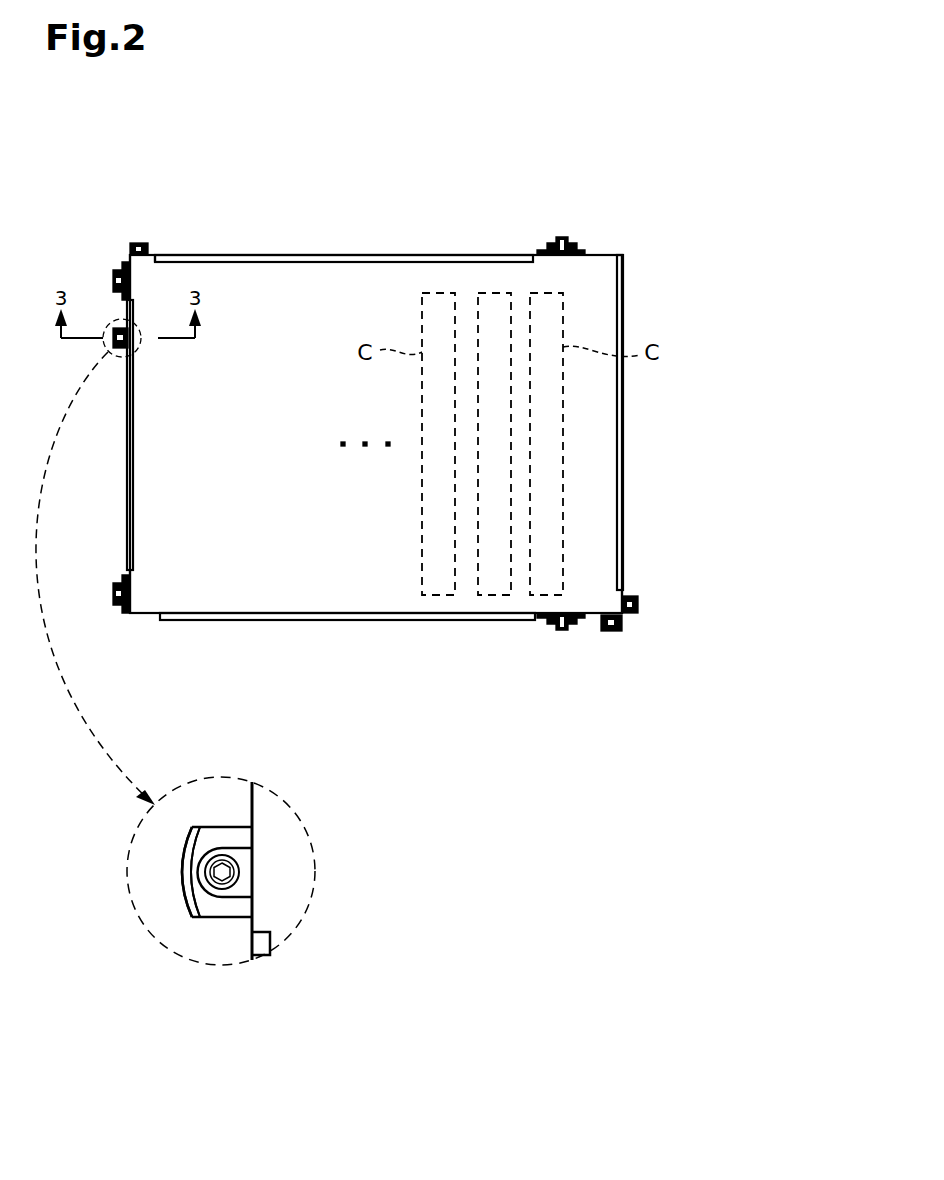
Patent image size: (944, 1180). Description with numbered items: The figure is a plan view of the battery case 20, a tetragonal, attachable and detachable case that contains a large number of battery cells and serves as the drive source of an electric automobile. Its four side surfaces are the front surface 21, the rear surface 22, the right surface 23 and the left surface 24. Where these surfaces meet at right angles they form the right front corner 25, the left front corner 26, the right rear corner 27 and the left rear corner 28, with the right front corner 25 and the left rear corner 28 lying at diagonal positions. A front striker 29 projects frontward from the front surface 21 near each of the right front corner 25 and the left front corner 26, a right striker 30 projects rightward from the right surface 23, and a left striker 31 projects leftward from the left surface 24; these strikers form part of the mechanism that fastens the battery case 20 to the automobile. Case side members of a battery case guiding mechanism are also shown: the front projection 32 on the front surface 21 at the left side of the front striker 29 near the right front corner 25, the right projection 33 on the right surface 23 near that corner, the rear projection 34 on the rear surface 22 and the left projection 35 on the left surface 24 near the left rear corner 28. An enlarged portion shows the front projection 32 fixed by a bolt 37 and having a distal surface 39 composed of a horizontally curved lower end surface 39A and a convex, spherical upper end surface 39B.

The battery case 20 is at (493, 200).
The front surface 21 is at (126, 499).
The rear surface 22 is at (625, 405).
The right surface 23 is at (396, 252).
The left surface 24 is at (380, 621).
The right front corner 25 is at (152, 273).
The left front corner 26 is at (147, 598).
The right rear corner 27 is at (598, 281).
The left rear corner 28 is at (610, 592).
The front striker 29 is at (113, 280).
The right striker 30 is at (562, 240).
The left striker 31 is at (562, 632).
The front projection 32 is at (110, 342).
The right projection 33 is at (142, 241).
The rear projection 34 is at (640, 605).
The left projection 35 is at (610, 633).
The bolt 37 is at (230, 878).
The distal surface 39 is at (116, 872).
The lower end surface 39A is at (184, 840).
The upper end surface 39B is at (188, 901).